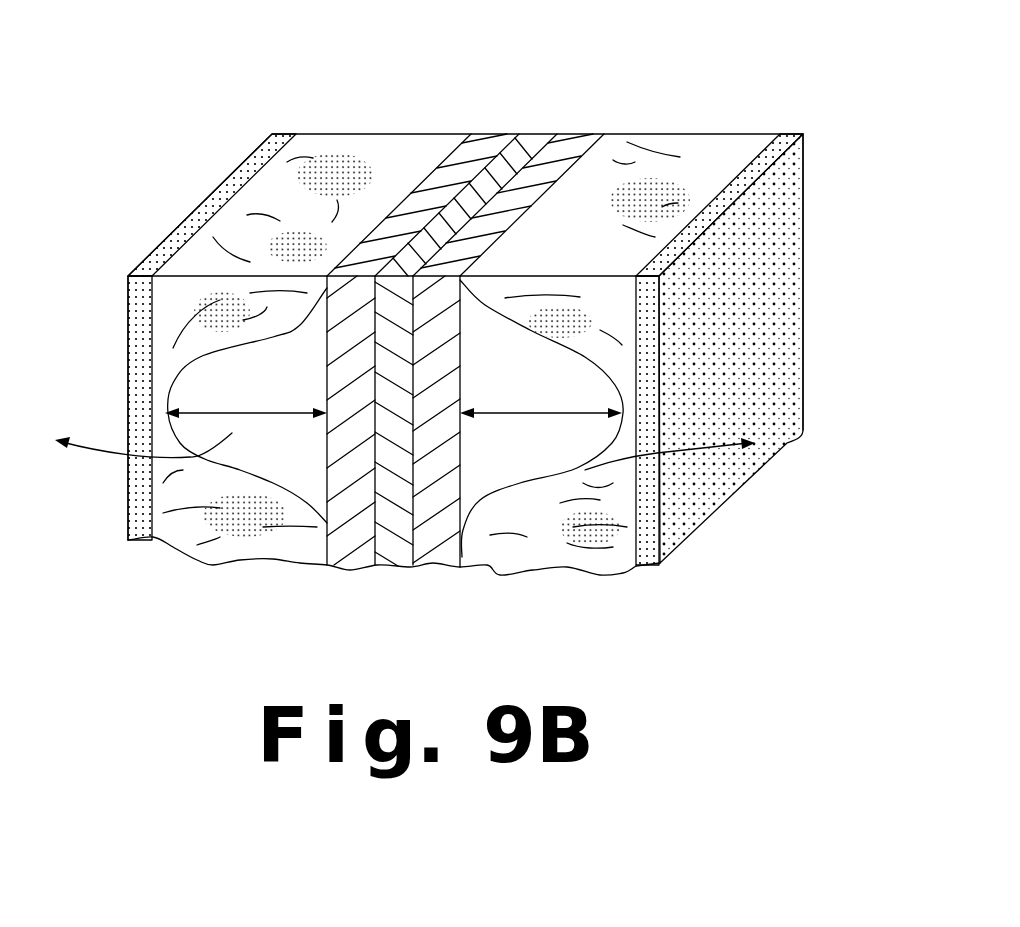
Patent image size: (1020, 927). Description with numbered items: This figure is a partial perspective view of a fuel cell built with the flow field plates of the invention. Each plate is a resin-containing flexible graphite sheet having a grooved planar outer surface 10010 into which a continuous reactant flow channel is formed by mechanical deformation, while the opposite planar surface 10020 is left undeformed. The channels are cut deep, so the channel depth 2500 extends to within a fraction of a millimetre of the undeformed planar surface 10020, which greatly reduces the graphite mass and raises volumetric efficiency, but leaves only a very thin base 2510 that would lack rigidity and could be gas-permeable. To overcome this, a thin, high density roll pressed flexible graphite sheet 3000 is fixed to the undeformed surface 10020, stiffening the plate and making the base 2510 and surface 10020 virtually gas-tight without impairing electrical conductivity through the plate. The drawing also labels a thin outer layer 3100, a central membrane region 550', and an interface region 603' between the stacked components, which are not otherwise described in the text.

The left termination layer 3100 is at (168, 245).
The undeformed planar outer surface 10020 is at (775, 313).
The roll pressed flexible graphite sheet 3000 is at (770, 317).
The electrode stack 603' is at (472, 141).
The grooved planar outer surface 10010 is at (462, 234).
The center dielectric layer 550' is at (459, 311).
The depth of the channel 2500 is at (222, 413).
The base 2510 is at (157, 413).